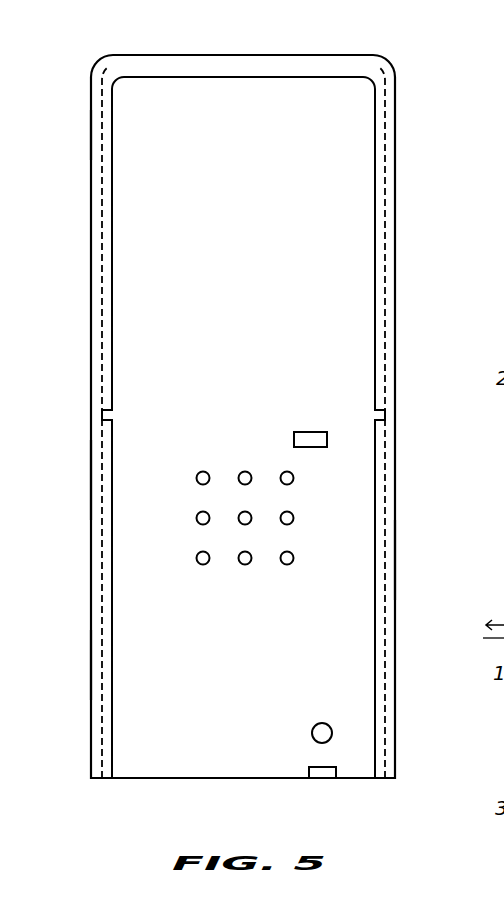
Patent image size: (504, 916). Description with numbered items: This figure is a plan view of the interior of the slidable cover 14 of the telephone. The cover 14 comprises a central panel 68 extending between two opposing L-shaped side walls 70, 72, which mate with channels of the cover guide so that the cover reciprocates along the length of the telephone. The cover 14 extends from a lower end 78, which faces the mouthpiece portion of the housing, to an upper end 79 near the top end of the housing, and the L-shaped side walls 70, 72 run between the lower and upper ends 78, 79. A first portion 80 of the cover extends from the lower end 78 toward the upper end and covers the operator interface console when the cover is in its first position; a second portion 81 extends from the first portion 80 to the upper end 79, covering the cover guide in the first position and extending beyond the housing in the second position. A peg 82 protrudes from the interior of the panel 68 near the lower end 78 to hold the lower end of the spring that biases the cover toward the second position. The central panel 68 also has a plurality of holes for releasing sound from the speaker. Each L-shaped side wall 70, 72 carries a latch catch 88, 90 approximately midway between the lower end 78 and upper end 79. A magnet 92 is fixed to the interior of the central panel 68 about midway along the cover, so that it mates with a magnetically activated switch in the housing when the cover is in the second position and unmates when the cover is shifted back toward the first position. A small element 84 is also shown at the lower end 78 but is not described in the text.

The slidable cover 14 is at (295, 395).
The central panel 68 is at (258, 225).
The L-shaped side wall 70 is at (91, 478).
The L-shaped side wall 72 is at (396, 556).
The lower end 78 is at (152, 779).
The upper end 79 is at (205, 55).
The first portion 80 is at (92, 664).
The second portion 81 is at (91, 132).
The peg 82 is at (313, 731).
The bottom tab 84 is at (320, 779).
The latch catch 88 is at (113, 410).
The latch catch 90 is at (374, 410).
The magnet 92 is at (310, 447).